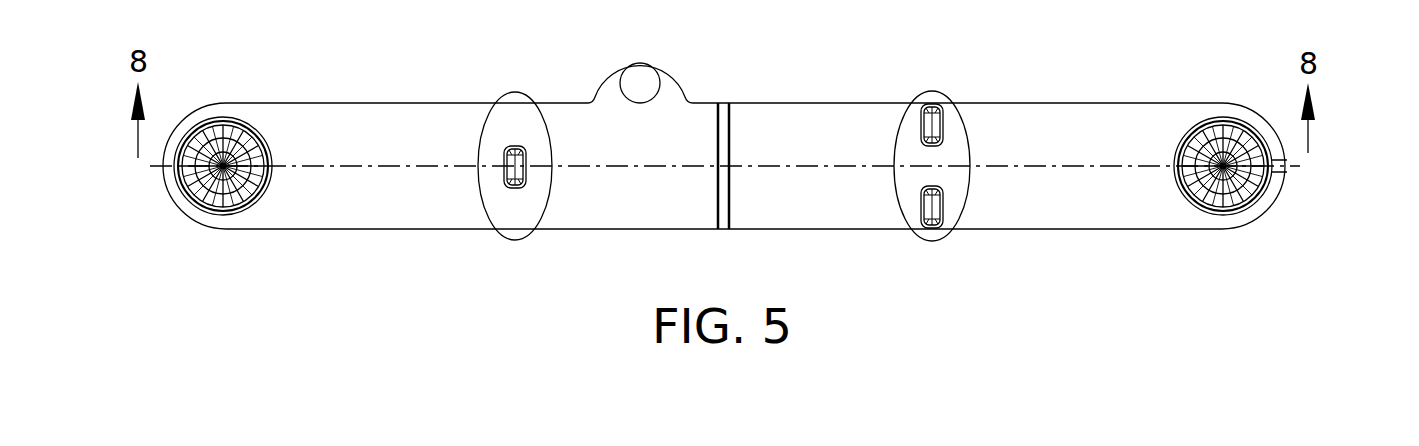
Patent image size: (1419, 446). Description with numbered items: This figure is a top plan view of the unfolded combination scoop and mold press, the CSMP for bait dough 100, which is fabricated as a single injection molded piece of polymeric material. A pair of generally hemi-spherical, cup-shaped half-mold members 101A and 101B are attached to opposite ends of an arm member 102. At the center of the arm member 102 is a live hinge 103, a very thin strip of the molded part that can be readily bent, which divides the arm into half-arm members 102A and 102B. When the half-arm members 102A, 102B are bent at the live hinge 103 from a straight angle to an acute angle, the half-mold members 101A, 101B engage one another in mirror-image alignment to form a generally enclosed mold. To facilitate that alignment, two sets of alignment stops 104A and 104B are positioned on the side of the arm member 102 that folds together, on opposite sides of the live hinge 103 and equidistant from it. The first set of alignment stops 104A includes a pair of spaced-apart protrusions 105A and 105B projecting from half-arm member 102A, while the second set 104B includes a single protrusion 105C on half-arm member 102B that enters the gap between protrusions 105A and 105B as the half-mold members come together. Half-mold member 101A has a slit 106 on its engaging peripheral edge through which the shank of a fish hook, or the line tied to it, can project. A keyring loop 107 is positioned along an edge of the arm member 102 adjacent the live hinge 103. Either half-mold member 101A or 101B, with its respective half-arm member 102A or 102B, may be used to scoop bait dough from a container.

The CSMP for bait dough 100 is at (370, 48).
The half-mold member 101A is at (1258, 201).
The half-mold member 101B is at (190, 203).
The arm member 102 is at (609, 246).
The half-arm member 102A is at (1120, 220).
The half-arm member 102B is at (323, 220).
The live hinge 103 is at (725, 92).
The first set of alignment stops 104A is at (942, 95).
The second set of alignment stops 104B is at (515, 92).
The protrusion 105A is at (928, 106).
The protrusion 105B is at (930, 228).
The protrusion 105C is at (515, 188).
The slit 106 is at (1302, 172).
The keyring loop 107 is at (625, 58).